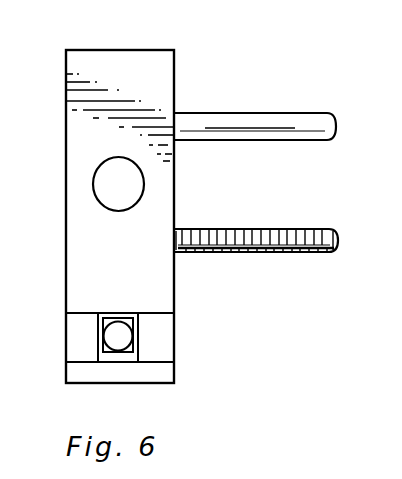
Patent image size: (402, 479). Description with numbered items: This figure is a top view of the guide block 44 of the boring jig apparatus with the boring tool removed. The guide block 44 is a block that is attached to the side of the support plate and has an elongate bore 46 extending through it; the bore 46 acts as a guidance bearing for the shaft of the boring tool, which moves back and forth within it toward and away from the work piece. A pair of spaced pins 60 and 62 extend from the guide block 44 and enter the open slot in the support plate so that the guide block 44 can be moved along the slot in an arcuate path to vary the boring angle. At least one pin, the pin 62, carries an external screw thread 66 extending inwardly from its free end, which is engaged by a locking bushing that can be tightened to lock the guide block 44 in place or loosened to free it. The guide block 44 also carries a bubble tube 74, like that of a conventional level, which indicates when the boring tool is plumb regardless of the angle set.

The guide block 44 is at (131, 59).
The elongate bore 46 is at (144, 196).
The pin 60 is at (267, 118).
The pin 62 is at (178, 250).
The external screw thread 66 is at (258, 235).
The bubble tube 74 is at (133, 337).